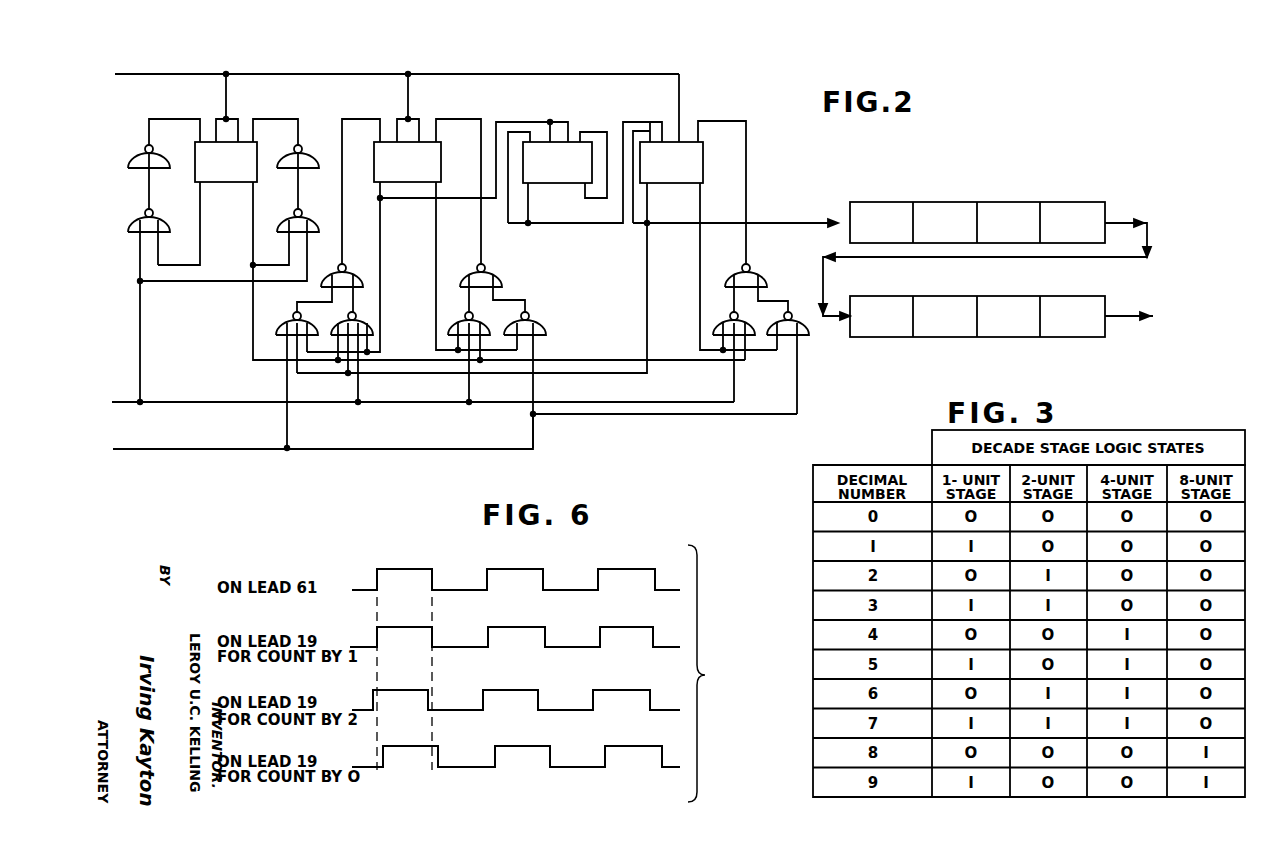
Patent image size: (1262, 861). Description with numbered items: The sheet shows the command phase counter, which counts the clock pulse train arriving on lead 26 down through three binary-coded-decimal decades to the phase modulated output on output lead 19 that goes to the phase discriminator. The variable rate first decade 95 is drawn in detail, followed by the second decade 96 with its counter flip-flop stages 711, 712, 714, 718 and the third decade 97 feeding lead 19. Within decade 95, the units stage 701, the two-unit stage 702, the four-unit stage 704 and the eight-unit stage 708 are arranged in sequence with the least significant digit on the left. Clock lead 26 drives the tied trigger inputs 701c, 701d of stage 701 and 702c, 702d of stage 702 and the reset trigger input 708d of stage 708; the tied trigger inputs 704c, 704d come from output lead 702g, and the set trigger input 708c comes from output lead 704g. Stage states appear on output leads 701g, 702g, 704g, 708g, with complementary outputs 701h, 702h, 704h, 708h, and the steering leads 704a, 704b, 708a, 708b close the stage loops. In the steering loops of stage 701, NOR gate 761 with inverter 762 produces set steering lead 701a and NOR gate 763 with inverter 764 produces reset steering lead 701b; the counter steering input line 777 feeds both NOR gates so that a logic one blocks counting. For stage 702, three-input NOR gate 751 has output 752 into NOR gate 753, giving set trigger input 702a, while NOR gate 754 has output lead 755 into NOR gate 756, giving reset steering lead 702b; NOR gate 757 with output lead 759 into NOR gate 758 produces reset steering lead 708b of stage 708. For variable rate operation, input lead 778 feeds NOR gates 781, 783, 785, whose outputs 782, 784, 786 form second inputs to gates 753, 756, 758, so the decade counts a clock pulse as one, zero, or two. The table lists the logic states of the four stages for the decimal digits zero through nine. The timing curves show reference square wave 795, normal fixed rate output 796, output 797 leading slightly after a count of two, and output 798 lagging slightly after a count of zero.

In FIG. 2, the clock pulse input lead 26 is at (193, 73).
In FIG. 2, the variable rate counter decade 95 is at (396, 55).
In FIG. 2, the second decade 96 is at (986, 248).
In FIG. 2, the third decade 97 is at (977, 304).
In FIG. 2, the output lead 19 is at (1113, 315).
In FIG. 2, the 1-unit flip-flop stage 701 is at (472, 224).
In FIG. 2, the set steering lead of stage 701 701a is at (199, 119).
In FIG. 2, the reset steering lead of stage 701 701b is at (255, 119).
In FIG. 2, the trigger input lead of stage 701 701c is at (216, 119).
In FIG. 2, the trigger input lead of stage 701 701d is at (238, 119).
In FIG. 2, the output lead of stage 701 701g is at (200, 195).
In FIG. 2, the output lead of stage 701 701h is at (253, 195).
In FIG. 2, the 2-unit flip-flop stage 702 is at (428, 214).
In FIG. 2, the set trigger input of stage 702 702a is at (380, 114).
In FIG. 2, the reset steering lead of stage 702 702b is at (440, 113).
In FIG. 2, the trigger input lead of stage 702 702c is at (397, 119).
In FIG. 2, the trigger input lead of stage 702 702d is at (419, 119).
In FIG. 2, the output lead of stage 702 702g is at (380, 200).
In FIG. 2, the output lead of stage 702 702h is at (436, 220).
In FIG. 2, the 4-unit flip-flop stage 704 is at (573, 158).
In FIG. 2, the set steering lead of stage 704 704a is at (538, 113).
In FIG. 2, the reset steering lead of stage 704 704b is at (580, 132).
In FIG. 2, the trigger input lead of stage 704 704c is at (550, 120).
In FIG. 2, the trigger input lead of stage 704 704d is at (574, 120).
In FIG. 2, the output lead of stage 704 704g is at (531, 193).
In FIG. 2, the output lead of stage 704 704h is at (585, 200).
In FIG. 2, the 8-unit flip-flop stage 708 is at (567, 238).
In FIG. 2, the set steering lead of stage 708 708a is at (650, 122).
In FIG. 2, the reset steering lead of stage 708 708b is at (727, 121).
In FIG. 2, the set trigger input lead of stage 708 708c is at (664, 121).
In FIG. 2, the reset trigger input lead of stage 708 708d is at (681, 86).
In FIG. 2, the output lead of stage 708 708g is at (654, 193).
In FIG. 2, the output lead of stage 708 708h is at (708, 193).
In FIG. 2, the 1-unit counter flip-flop stage 711 is at (880, 224).
In FIG. 2, the 2-unit counter flip-flop stage 712 is at (944, 224).
In FIG. 2, the 4-unit counter flip-flop stage 714 is at (1007, 224).
In FIG. 2, the 8-unit counter flip-flop stage 718 is at (1071, 224).
In FIG. 2, the three-input NOR gate 751 is at (347, 316).
In FIG. 2, the output of NOR gate 751 752 is at (357, 285).
In FIG. 2, the NOR gate 753 is at (323, 283).
In FIG. 2, the two-input NOR gate 754 is at (449, 326).
In FIG. 2, the output lead of NOR gate 754 755 is at (462, 300).
In FIG. 2, the NOR gate 756 is at (503, 272).
In FIG. 2, the NOR gate 757 is at (716, 325).
In FIG. 2, the NOR gate 758 is at (758, 280).
In FIG. 2, the output lead of NOR gate 757 759 is at (730, 293).
In FIG. 2, the NOR gate 761 is at (136, 215).
In FIG. 2, the inverter 762 is at (142, 150).
In FIG. 2, the NOR gate 763 is at (290, 215).
In FIG. 2, the inverter 764 is at (296, 143).
In FIG. 2, the counter steering pulse input line 777 is at (119, 400).
In FIG. 2, the input lead 778 is at (241, 448).
In FIG. 2, the three-input NOR gate 781 is at (278, 329).
In FIG. 2, the output of NOR gate 781 782 is at (293, 316).
In FIG. 2, the two-input NOR gate 783 is at (542, 322).
In FIG. 2, the output of NOR gate 783 784 is at (516, 300).
In FIG. 2, the two-input NOR gate 785 is at (806, 332).
In FIG. 2, the output of NOR gate 785 786 is at (772, 301).
In FIG. 6, the reference square wave curve 795 is at (690, 574).
In FIG. 6, the fixed rate output curve 796 is at (686, 630).
In FIG. 6, the count-by-two output curve 797 is at (684, 694).
In FIG. 6, the count-by-zero output curve 798 is at (694, 752).